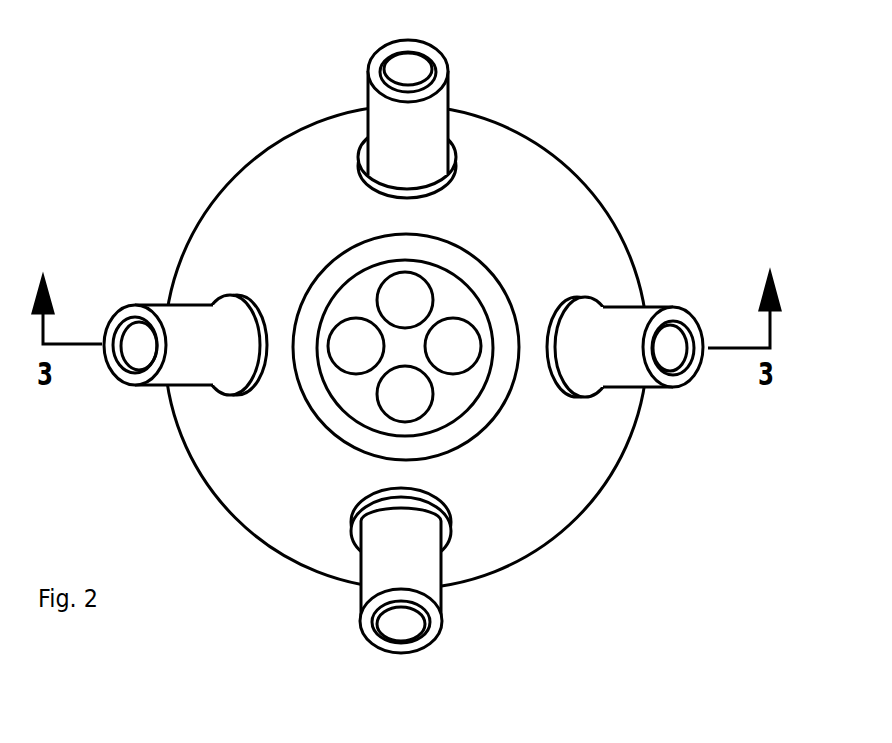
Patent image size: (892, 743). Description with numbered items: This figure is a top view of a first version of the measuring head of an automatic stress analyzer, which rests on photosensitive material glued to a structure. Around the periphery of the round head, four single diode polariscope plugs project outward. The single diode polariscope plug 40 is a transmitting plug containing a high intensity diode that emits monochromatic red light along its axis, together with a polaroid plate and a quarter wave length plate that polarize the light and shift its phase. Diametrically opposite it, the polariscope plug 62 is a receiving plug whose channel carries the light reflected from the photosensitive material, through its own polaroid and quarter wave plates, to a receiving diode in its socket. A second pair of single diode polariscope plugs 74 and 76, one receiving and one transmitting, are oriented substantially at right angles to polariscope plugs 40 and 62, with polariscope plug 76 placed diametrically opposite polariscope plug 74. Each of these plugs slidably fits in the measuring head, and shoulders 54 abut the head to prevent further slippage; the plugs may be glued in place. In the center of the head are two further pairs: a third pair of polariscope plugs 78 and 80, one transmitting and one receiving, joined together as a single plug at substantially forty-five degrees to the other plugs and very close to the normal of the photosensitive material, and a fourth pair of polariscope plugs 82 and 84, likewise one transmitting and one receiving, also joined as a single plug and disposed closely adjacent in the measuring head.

The single diode polariscope plug 40 is at (668, 307).
The shoulders 54 is at (446, 177).
The polariscope plug 62 is at (127, 305).
The single diode polariscope plug 74 is at (448, 73).
The single diode polariscope plug 76 is at (443, 575).
The polariscope plug 78 is at (472, 327).
The polariscope plug 80 is at (333, 327).
The polariscope plug 82 is at (430, 286).
The polariscope plug 84 is at (422, 413).